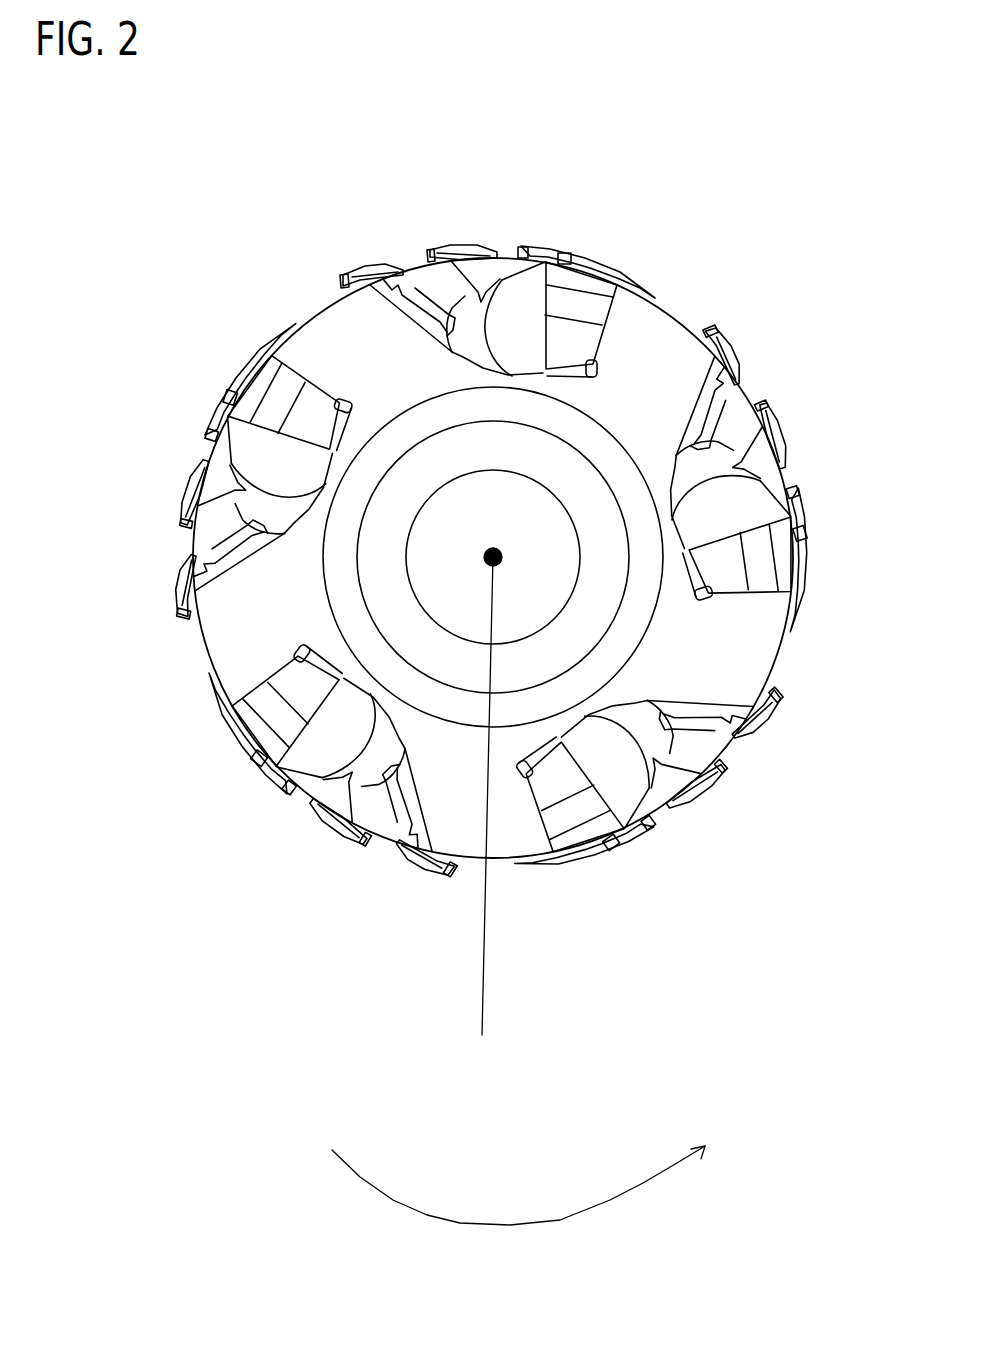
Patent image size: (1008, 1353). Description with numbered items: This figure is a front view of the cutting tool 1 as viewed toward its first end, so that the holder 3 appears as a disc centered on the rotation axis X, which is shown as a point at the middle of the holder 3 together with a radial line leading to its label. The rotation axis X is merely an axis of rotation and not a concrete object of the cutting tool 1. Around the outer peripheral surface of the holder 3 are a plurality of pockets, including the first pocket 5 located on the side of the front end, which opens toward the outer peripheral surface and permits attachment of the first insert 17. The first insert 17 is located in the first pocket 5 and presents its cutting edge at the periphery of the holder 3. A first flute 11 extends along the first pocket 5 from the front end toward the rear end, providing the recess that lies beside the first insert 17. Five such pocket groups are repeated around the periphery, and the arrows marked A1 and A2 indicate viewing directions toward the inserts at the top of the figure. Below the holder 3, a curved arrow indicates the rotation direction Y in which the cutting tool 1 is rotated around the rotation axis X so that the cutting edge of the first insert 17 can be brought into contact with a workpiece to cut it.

The cutting tool 1 is at (297, 268).
The holder 3 is at (340, 358).
The first pocket 5 is at (652, 884).
The first flute 11 is at (615, 757).
The first insert 17 is at (583, 812).
The first insert A1 is at (493, 222).
The second insert A2 is at (587, 223).
The rotation axis X is at (482, 819).
The rotation direction Y is at (518, 1219).